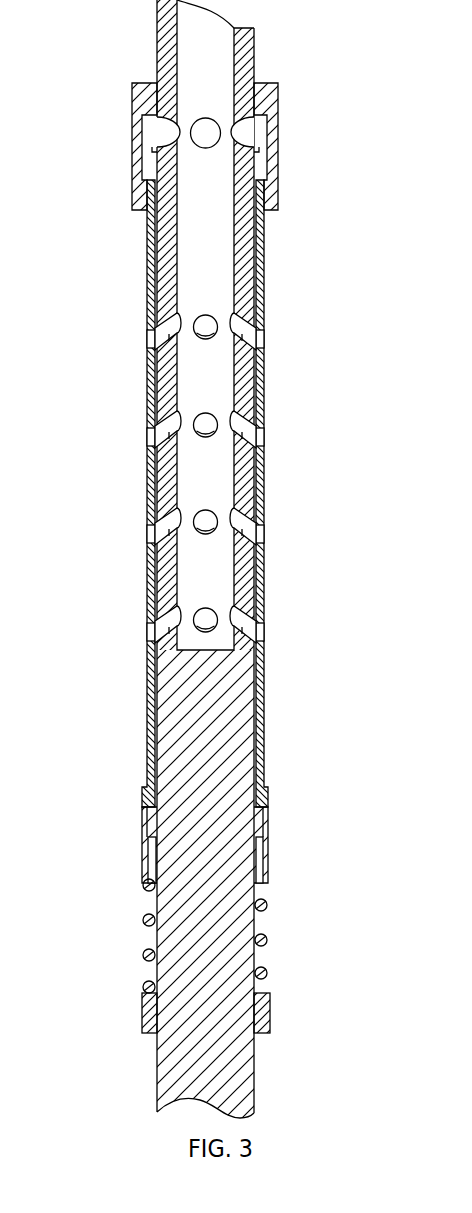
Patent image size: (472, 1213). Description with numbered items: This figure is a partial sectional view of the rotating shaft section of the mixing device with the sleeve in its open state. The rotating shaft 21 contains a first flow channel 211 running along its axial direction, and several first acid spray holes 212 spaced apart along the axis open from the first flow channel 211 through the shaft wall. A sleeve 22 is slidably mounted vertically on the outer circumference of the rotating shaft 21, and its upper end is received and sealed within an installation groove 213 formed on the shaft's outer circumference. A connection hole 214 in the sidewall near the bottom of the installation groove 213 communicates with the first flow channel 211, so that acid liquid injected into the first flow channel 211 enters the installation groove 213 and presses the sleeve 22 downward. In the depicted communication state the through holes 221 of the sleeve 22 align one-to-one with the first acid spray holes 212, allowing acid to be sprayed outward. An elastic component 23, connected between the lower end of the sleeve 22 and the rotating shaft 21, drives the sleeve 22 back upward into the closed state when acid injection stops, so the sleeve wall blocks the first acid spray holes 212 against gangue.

The rotating shaft 21 is at (167, 60).
The first flow channel 211 is at (207, 80).
The first acid spray hole 212 is at (170, 340).
The installation groove 213 is at (148, 167).
The connection hole 214 is at (243, 138).
The sleeve 22 is at (150, 277).
The through hole 221 is at (258, 338).
The elastic component 23 is at (150, 927).